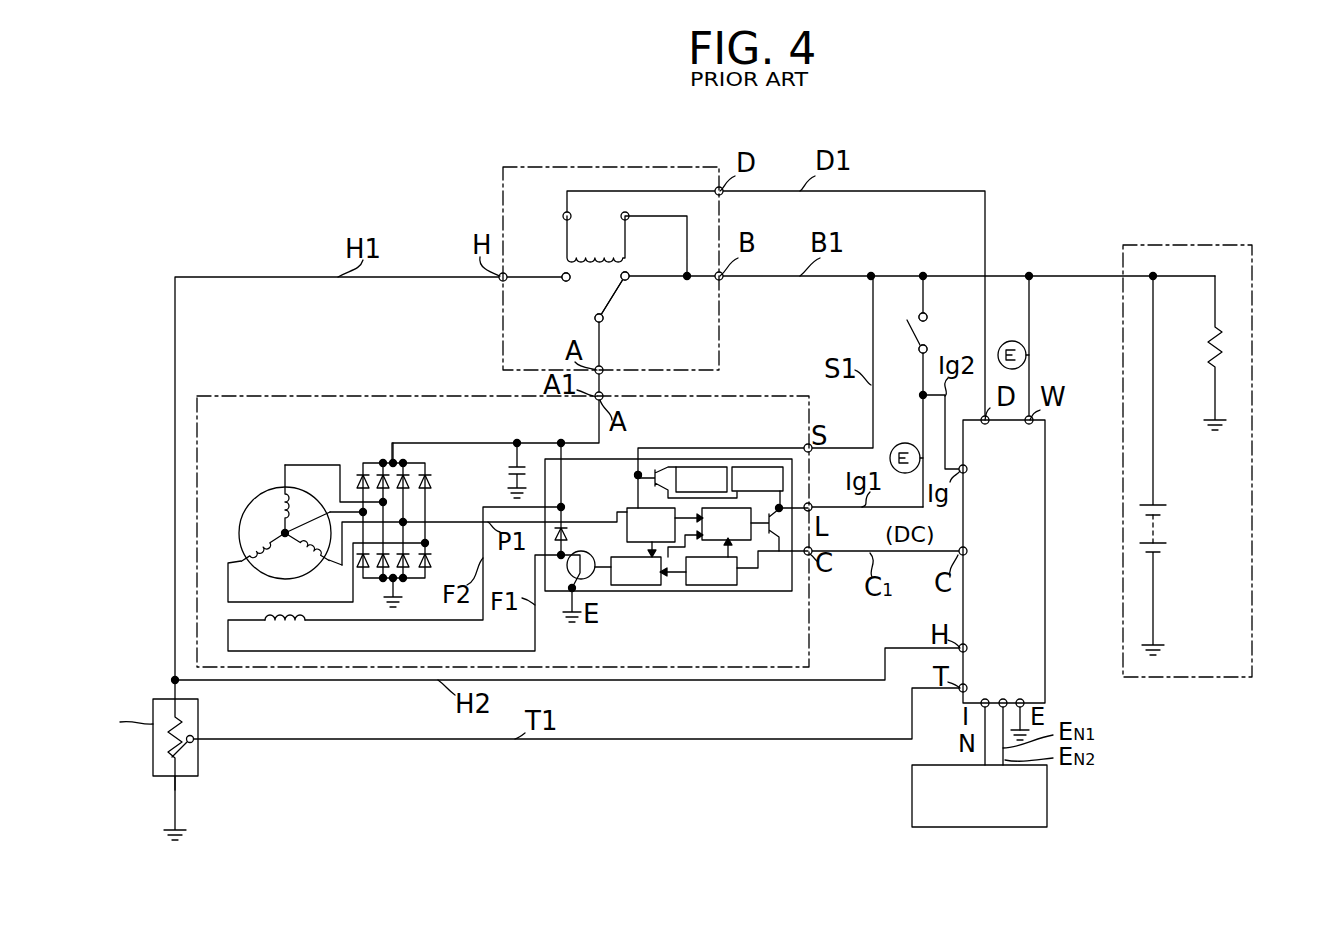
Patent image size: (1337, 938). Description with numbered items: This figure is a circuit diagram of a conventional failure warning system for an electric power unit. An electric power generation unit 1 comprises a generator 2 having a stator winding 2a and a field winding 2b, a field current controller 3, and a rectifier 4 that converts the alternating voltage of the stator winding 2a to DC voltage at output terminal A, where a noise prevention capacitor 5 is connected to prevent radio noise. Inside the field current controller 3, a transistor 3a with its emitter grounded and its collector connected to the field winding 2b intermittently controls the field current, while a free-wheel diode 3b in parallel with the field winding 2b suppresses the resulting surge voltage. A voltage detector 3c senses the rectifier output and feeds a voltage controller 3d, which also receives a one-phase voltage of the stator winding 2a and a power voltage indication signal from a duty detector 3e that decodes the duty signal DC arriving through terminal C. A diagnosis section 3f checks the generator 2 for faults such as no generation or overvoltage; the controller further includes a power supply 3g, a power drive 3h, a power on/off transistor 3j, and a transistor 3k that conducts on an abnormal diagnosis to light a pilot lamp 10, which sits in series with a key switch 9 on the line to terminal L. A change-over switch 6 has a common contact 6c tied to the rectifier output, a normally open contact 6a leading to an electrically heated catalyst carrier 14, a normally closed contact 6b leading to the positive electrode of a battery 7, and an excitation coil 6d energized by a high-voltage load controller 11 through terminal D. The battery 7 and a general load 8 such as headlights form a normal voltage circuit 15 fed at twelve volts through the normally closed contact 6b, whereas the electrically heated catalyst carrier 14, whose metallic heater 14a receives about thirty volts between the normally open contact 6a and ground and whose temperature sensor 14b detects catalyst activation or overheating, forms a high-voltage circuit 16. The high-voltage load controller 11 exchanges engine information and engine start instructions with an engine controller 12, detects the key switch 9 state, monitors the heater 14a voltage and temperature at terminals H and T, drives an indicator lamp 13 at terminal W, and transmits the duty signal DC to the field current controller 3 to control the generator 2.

The electric power generation unit 1 is at (425, 396).
The generator 2 is at (277, 506).
The stator winding 2a is at (252, 548).
The field winding 2b is at (300, 620).
The field current controller 3 is at (615, 598).
The transistor 3a is at (553, 590).
The free-wheel diode 3b is at (570, 536).
The voltage detector 3c is at (638, 475).
The voltage controller 3d is at (643, 585).
The duty detector 3e is at (707, 585).
The diagnosis section 3f is at (747, 540).
The power supply 3g is at (703, 467).
The power drive 3h is at (755, 467).
The power on/off transistor 3j is at (656, 468).
The transistor 3k is at (784, 531).
The rectifier 4 is at (426, 506).
The noise prevention capacitor 5 is at (510, 470).
The change-over switch 6 is at (503, 196).
The normally open contact 6a is at (566, 282).
The normally closed contact 6b is at (627, 274).
The common contact 6c is at (604, 318).
The excitation coil 6d is at (568, 257).
The battery 7 is at (1162, 537).
The general load 8 is at (1210, 357).
The key switch 9 is at (908, 333).
The pilot lamp 10 is at (900, 444).
The high-voltage load controller 11 is at (1045, 536).
The engine controller 12 is at (1047, 783).
The indicator lamp 13 is at (1010, 341).
The electrically heated catalyst carrier 14 is at (198, 758).
The heater 14a is at (198, 776).
The temperature sensor 14b is at (195, 740).
The normal voltage circuit 15 is at (1123, 253).
The high-voltage circuit 16 is at (198, 705).